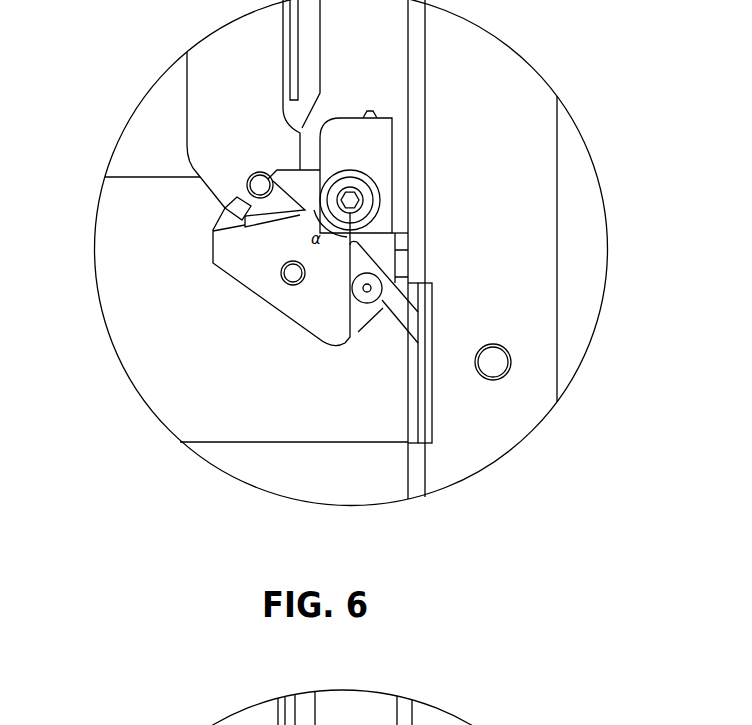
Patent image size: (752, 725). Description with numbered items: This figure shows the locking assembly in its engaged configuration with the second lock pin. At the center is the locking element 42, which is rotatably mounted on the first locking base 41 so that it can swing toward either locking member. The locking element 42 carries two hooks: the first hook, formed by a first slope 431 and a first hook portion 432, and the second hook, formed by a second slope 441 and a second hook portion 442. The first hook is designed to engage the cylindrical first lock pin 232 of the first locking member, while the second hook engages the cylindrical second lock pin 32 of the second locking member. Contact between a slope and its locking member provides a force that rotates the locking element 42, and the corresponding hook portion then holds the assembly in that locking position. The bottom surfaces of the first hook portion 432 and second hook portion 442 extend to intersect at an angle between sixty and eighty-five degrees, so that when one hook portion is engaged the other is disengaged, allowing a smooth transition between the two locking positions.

The first locking base 41 is at (380, 142).
The first lock pin 232 is at (248, 187).
The first slope 431 is at (224, 207).
The first hook portion 432 is at (213, 231).
The locking element 42 is at (248, 262).
The second hook portion 442 is at (358, 298).
The second lock pin 32 is at (368, 285).
The second slope 441 is at (418, 312).